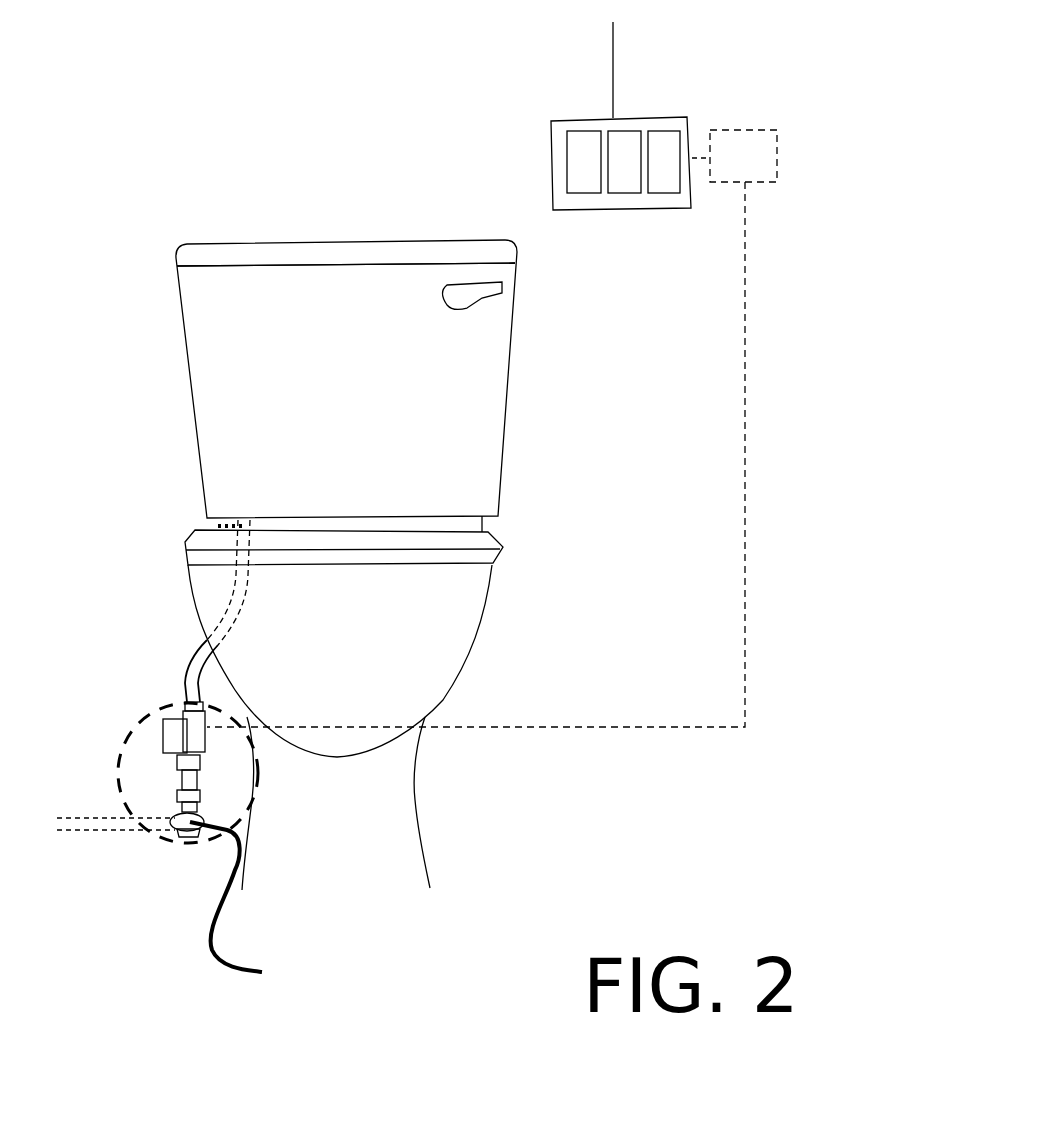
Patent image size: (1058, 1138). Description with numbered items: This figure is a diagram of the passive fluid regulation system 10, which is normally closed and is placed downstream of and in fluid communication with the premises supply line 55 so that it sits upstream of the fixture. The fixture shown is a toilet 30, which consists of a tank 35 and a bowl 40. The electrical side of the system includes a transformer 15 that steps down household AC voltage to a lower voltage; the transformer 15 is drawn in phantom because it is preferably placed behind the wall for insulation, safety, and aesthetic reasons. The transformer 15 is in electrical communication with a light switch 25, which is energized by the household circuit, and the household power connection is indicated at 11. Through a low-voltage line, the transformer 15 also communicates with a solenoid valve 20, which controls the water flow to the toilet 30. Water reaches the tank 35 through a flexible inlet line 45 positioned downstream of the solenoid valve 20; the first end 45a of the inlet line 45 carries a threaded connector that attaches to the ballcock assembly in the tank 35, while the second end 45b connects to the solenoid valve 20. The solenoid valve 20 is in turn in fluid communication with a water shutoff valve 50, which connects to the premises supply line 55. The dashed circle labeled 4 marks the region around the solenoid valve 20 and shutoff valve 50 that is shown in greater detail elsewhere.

The passive fluid regulation system 10 is at (296, 186).
The power line 11 is at (612, 67).
The transformer 15 is at (750, 167).
The solenoid valve 20 is at (183, 740).
The light switch 25 is at (592, 178).
The toilet 30 is at (524, 450).
The tank 35 is at (362, 408).
The bowl 40 is at (395, 683).
The inlet line 45 is at (182, 637).
The first end of the inlet line 45a is at (217, 525).
The second end of the inlet line 45b is at (203, 702).
The detail region of FIG. 4 is at (184, 773).
The water shutoff valve 50 is at (243, 904).
The premises supply line 55 is at (108, 830).